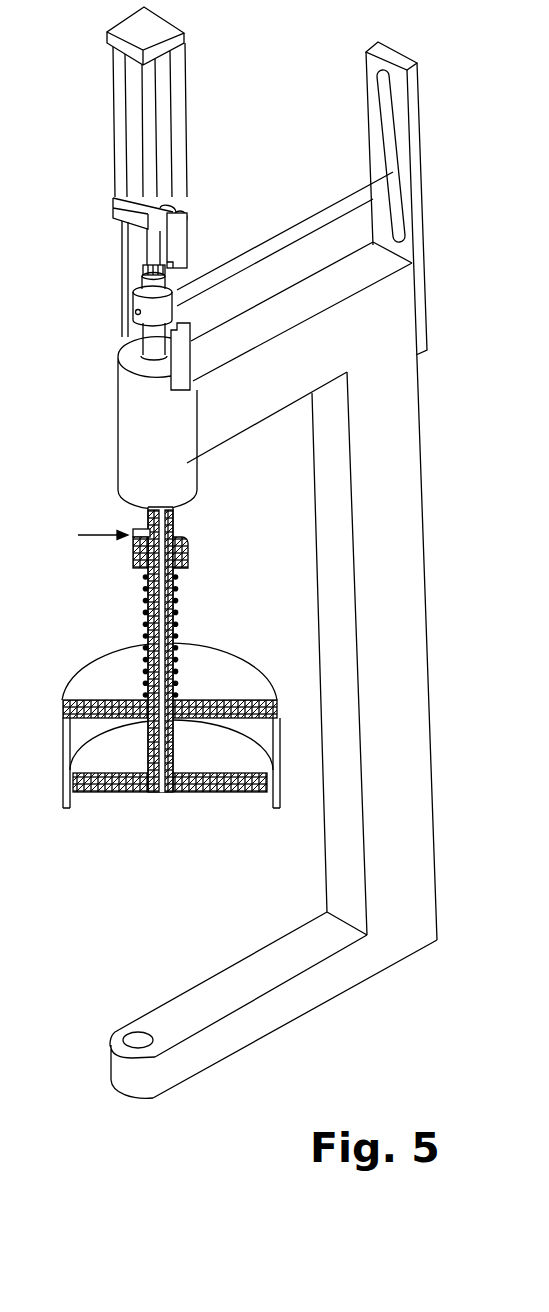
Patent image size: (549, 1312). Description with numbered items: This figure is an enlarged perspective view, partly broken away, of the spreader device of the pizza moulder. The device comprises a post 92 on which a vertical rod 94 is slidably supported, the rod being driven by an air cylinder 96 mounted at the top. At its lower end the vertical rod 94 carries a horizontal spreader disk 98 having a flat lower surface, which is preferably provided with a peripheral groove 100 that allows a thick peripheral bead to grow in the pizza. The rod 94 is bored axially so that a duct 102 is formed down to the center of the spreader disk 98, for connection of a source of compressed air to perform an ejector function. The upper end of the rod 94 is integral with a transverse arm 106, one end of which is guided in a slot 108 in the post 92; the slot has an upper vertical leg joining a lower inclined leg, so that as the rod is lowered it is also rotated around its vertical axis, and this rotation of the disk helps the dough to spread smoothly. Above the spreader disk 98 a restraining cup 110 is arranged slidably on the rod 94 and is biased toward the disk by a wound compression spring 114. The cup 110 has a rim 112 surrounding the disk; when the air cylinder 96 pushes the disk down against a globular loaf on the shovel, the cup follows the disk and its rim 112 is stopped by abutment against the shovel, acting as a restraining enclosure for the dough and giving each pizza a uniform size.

The post 92 is at (405, 482).
The vertical rod 94 is at (133, 325).
The air cylinder 96 is at (160, 135).
The spreader disk 98 is at (138, 792).
The peripheral groove 100 is at (83, 793).
The duct 102 is at (168, 740).
The transverse arm 106 is at (287, 237).
The slot 108 is at (380, 131).
The restraining cup 110 is at (100, 665).
The rim 112 is at (73, 792).
The wound compression spring 114 is at (180, 612).